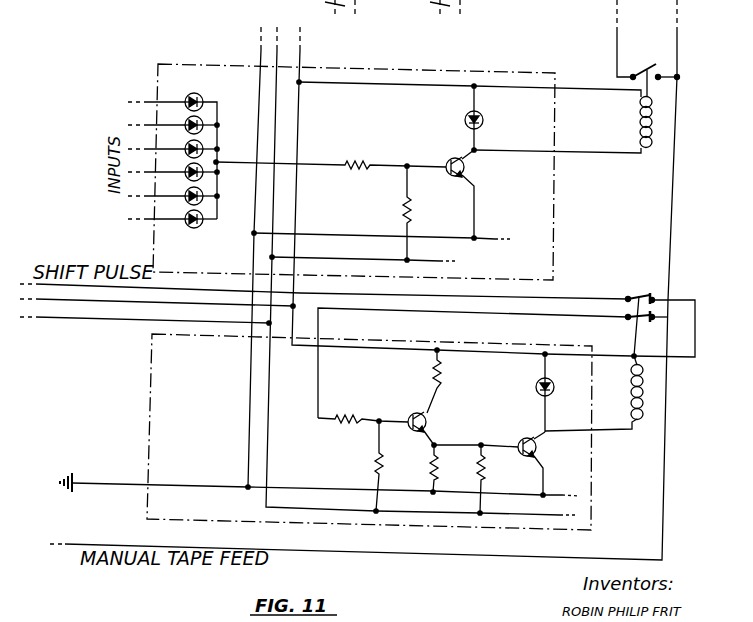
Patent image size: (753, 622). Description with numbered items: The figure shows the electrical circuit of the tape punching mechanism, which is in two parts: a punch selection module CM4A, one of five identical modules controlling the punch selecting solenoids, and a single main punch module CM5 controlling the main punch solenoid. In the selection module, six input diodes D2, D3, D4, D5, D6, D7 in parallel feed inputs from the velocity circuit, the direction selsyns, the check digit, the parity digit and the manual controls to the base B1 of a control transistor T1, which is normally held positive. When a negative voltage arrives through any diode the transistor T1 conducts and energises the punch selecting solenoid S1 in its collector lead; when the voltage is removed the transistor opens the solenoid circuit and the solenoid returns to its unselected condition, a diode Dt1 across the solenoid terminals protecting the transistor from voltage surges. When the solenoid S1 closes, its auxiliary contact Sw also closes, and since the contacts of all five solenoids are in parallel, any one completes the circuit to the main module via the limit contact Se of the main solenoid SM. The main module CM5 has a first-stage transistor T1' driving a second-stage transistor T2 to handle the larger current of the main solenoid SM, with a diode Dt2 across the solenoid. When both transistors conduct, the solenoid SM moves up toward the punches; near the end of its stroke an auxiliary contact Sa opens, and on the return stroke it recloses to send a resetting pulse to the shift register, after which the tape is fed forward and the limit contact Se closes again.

The input diode D2 is at (186, 156).
The input diode D3 is at (186, 125).
The input diode D4 is at (186, 149).
The input diode D5 is at (186, 172).
The input diode D6 is at (186, 196).
The input diode D7 is at (186, 219).
The punch selection module CM4A is at (354, 172).
The base of control transistor B1 is at (331, 204).
The control transistor T1 is at (473, 194).
The protective diode Dt1 is at (553, 119).
The auxiliary contact Sw is at (648, 63).
The punch selecting solenoid S1 is at (634, 122).
The auxiliary contact of main solenoid Sa is at (640, 315).
The limit contact of main solenoid Se is at (493, 363).
The main punch solenoid SM is at (594, 392).
The main punch module CM5 is at (369, 432).
The first-stage transistor of main punch module T1' is at (418, 431).
The protective diode Dt2 is at (524, 392).
The second-stage transistor T2 is at (540, 464).